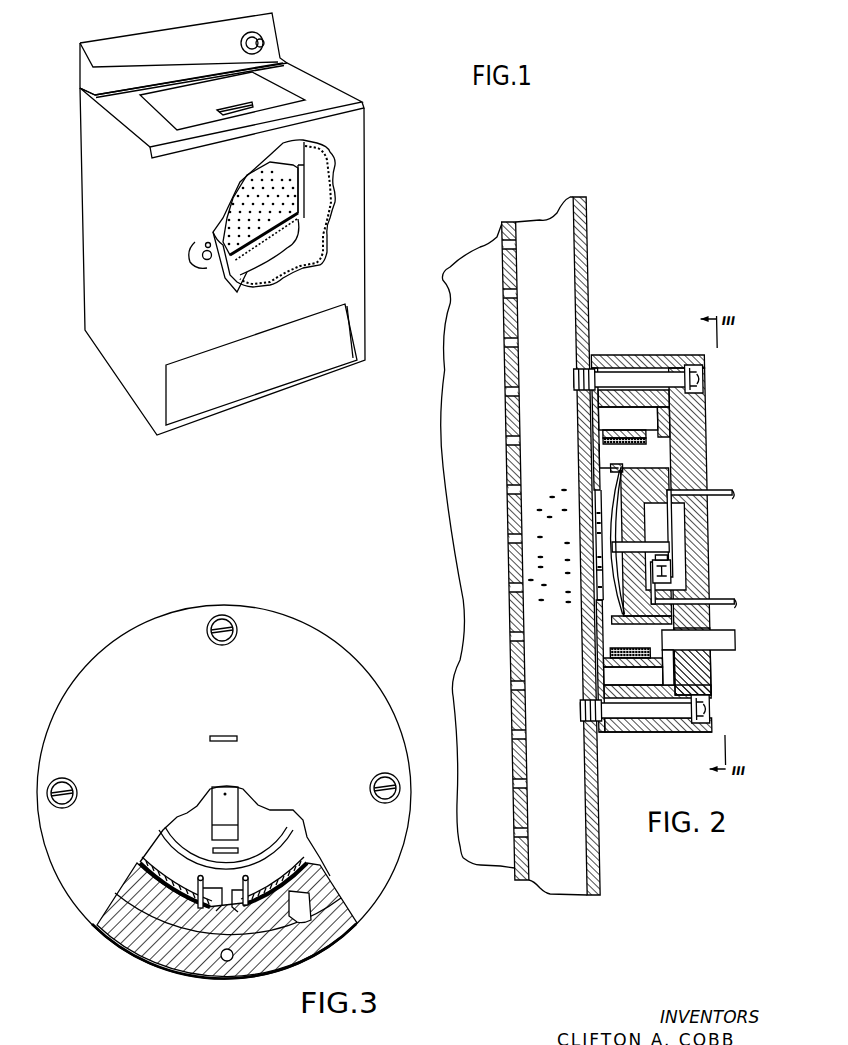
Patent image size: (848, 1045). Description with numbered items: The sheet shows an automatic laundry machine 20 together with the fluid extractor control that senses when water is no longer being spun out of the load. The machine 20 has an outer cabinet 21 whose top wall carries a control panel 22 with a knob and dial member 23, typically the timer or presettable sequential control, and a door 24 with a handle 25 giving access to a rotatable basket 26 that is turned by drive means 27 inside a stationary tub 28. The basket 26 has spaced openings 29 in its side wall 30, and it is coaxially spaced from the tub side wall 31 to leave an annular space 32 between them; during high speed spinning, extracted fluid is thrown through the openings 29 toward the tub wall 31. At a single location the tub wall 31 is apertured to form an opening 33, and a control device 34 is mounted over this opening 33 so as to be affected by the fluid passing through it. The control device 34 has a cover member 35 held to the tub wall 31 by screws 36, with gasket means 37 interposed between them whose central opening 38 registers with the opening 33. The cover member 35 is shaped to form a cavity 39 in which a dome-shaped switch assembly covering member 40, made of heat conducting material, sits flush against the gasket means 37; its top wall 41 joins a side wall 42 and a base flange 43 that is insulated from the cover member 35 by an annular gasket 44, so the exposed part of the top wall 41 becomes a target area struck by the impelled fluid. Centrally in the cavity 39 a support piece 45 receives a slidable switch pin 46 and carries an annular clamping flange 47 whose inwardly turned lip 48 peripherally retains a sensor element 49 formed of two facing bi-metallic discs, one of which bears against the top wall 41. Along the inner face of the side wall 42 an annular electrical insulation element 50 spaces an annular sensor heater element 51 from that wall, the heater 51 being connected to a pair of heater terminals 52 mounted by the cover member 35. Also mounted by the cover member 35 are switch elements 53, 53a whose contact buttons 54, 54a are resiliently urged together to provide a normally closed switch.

In FIG. 1, the laundry machine 20 is at (325, 76).
In FIG. 1, the outer cabinet 21 is at (353, 205).
In FIG. 1, the control panel 22 is at (163, 43).
In FIG. 1, the knob and dial member 23 is at (268, 42).
In FIG. 1, the door 24 is at (194, 117).
In FIG. 1, the handle 25 is at (223, 114).
In FIG. 1, the basket 26 is at (235, 283).
In FIG. 2, the basket 26 is at (438, 467).
In FIG. 1, the drive means 27 is at (205, 268).
In FIG. 1, the tub 28 is at (298, 152).
In FIG. 2, the tub 28 is at (597, 272).
In FIG. 2, the openings 29 is at (521, 397).
In FIG. 2, the side wall 30 is at (514, 551).
In FIG. 2, the tub side wall 31 is at (599, 310).
In FIG. 2, the annular space 32 is at (563, 227).
In FIG. 1, the opening 33 is at (302, 193).
In FIG. 2, the opening 33 is at (579, 503).
In FIG. 1, the control device 34 is at (325, 230).
In FIG. 2, the control device 34 is at (669, 355).
In FIG. 3, the control device 34 is at (290, 610).
In FIG. 2, the cover member 35 is at (709, 418).
In FIG. 3, the cover member 35 is at (358, 682).
In FIG. 2, the screws 36 is at (705, 371).
In FIG. 3, the screws 36 is at (396, 772).
In FIG. 2, the gasket means 37 is at (597, 740).
In FIG. 2, the central opening 38 is at (586, 598).
In FIG. 2, the cavity 39 is at (598, 682).
In FIG. 2, the switch assembly covering member 40 is at (594, 569).
In FIG. 2, the top wall 41 is at (598, 542).
In FIG. 2, the side wall 42 is at (622, 418).
In FIG. 2, the base flange 43 is at (648, 722).
In FIG. 3, the base flange 43 is at (133, 883).
In FIG. 2, the annular gasket 44 is at (674, 674).
In FIG. 2, the support piece 45 is at (655, 521).
In FIG. 3, the support piece 45 is at (177, 828).
In FIG. 2, the switch pin 46 is at (670, 549).
In FIG. 2, the clamping flange 47 is at (652, 470).
In FIG. 2, the lip 48 is at (612, 468).
In FIG. 2, the sensor element 49 is at (608, 518).
In FIG. 2, the electrical insulation element 50 is at (662, 437).
In FIG. 3, the electrical insulation element 50 is at (142, 872).
In FIG. 2, the sensor heater element 51 is at (625, 651).
In FIG. 3, the sensor heater element 51 is at (307, 918).
In FIG. 2, the heater terminals 52 is at (722, 636).
In FIG. 3, the heater terminals 52 is at (223, 902).
In FIG. 2, the switch element 53 is at (736, 496).
In FIG. 3, the switch element 53 is at (236, 736).
In FIG. 2, the switch element 53a is at (735, 605).
In FIG. 3, the switch element 53a is at (240, 850).
In FIG. 2, the contact button 54 is at (677, 580).
In FIG. 2, the contact button 54a is at (672, 557).